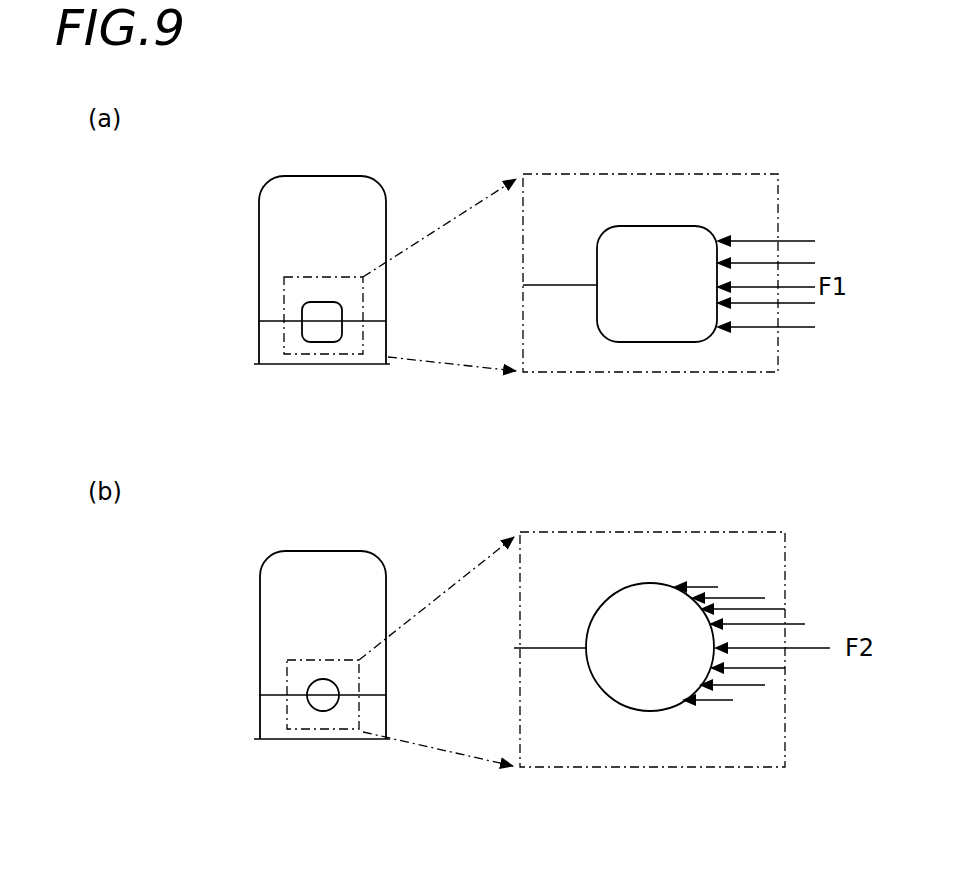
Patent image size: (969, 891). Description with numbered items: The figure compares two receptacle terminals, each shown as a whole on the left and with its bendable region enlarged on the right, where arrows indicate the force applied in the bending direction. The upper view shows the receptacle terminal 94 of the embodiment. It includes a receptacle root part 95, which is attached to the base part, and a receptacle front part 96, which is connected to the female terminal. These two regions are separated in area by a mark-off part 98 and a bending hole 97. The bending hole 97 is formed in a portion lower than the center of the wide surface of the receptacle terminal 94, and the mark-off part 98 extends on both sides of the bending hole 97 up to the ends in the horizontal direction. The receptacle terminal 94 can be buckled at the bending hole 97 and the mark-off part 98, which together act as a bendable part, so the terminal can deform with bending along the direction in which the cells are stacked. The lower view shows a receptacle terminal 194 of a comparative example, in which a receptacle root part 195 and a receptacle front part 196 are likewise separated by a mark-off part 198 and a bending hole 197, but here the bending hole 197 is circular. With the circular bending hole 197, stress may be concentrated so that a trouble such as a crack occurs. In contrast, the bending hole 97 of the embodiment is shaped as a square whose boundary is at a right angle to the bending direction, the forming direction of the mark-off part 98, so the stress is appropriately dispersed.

The receptacle terminal 94 is at (214, 151).
The receptacle root part 95 is at (268, 357).
The receptacle front part 96 is at (275, 213).
The bending hole 97 is at (302, 306).
The mark-off part 98 is at (277, 321).
The receptacle terminal 194 is at (212, 524).
The receptacle root part 195 is at (276, 728).
The receptacle front part 196 is at (283, 592).
The bending hole 197 is at (622, 225).
The mark-off part 198 is at (272, 697).